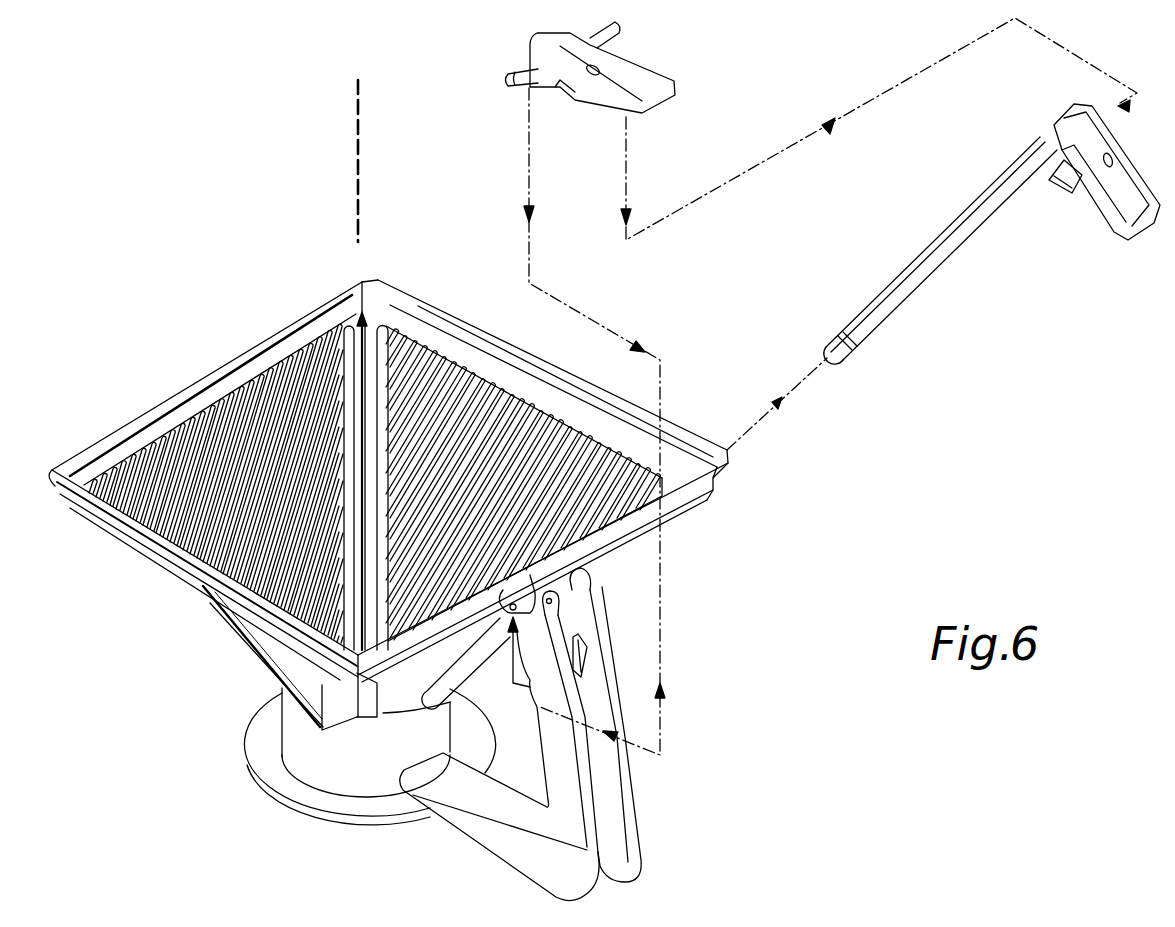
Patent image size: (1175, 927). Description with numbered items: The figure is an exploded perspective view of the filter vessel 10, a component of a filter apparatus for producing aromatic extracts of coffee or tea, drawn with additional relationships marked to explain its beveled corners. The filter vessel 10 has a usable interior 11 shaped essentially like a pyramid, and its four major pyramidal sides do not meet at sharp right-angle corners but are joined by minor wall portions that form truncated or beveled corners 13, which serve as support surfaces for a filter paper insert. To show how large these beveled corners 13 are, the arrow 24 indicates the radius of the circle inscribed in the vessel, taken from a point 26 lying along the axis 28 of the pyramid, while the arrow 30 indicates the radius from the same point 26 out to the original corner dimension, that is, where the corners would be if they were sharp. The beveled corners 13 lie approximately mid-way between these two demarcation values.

The filter vessel 10 is at (122, 589).
The usable interior 11 is at (158, 394).
The beveled corners 13 is at (112, 478).
The arrow 24 is at (365, 500).
The point 26 is at (366, 500).
The axis 28 is at (357, 157).
The arrow 30 is at (369, 333).